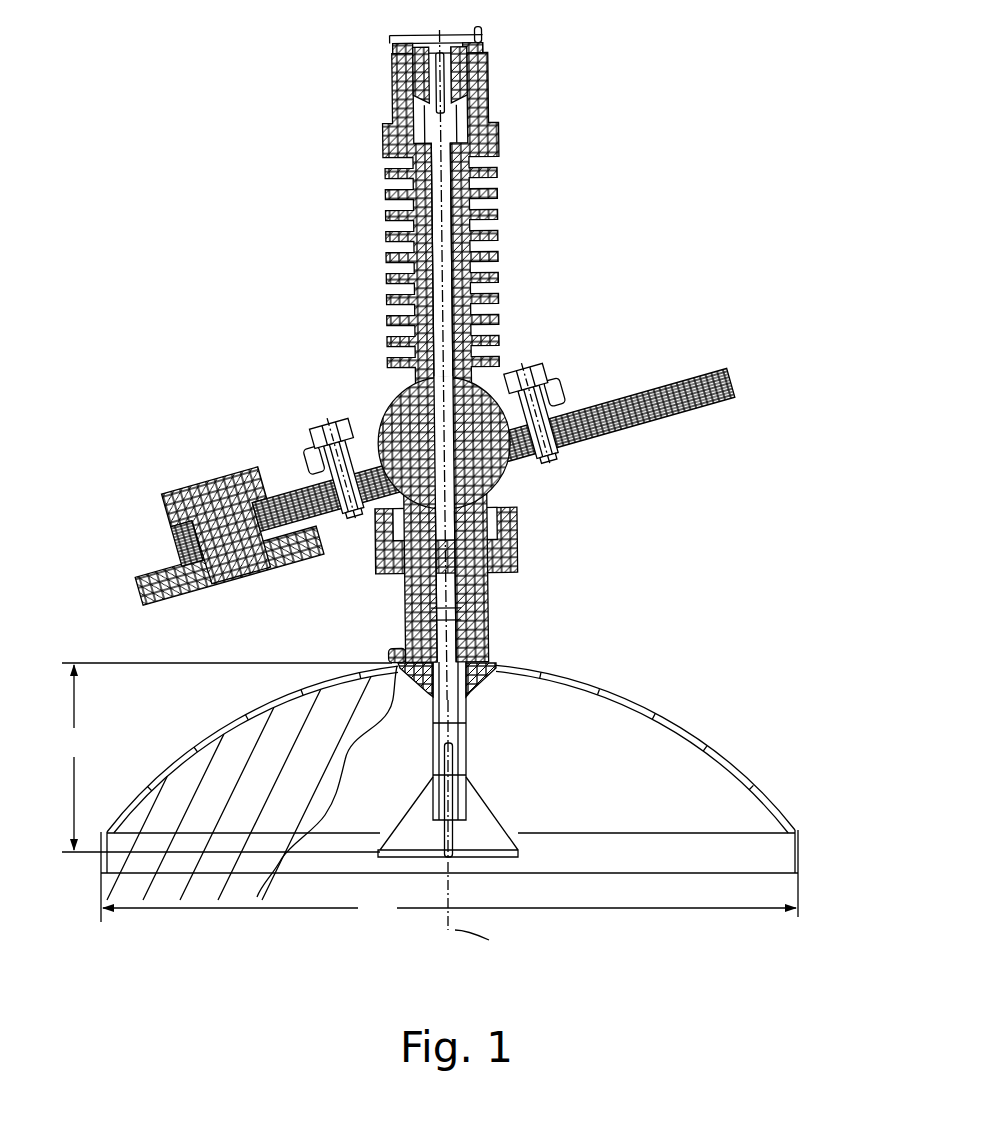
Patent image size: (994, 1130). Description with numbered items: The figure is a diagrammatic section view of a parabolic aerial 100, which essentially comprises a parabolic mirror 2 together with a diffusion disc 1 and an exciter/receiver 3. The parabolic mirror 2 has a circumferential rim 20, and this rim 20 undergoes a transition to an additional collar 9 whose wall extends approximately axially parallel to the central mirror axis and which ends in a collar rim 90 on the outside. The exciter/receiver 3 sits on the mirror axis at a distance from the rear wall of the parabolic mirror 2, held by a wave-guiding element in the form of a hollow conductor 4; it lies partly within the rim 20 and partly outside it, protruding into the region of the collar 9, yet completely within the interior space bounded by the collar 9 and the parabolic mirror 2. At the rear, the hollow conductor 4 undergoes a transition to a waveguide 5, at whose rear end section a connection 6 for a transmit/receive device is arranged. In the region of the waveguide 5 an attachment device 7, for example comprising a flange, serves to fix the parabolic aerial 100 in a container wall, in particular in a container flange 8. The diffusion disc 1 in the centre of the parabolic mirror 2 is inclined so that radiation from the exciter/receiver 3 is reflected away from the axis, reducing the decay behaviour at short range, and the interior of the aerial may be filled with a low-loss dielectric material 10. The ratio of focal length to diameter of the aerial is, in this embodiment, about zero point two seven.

The parabolic aerial 100 is at (226, 232).
The diffusion disc 1 is at (490, 660).
The parabolic mirror 2 is at (629, 702).
The exciter/receiver 3 is at (483, 830).
The hollow conductor 4 is at (467, 738).
The waveguide 5 is at (473, 265).
The connection 6 is at (489, 84).
The attachment device 7 is at (300, 422).
The container flange 8 is at (150, 553).
The collar 9 is at (785, 857).
The dielectric material 10 is at (232, 750).
The rim of the parabolic mirror 20 is at (667, 830).
The collar rim 90 is at (733, 875).